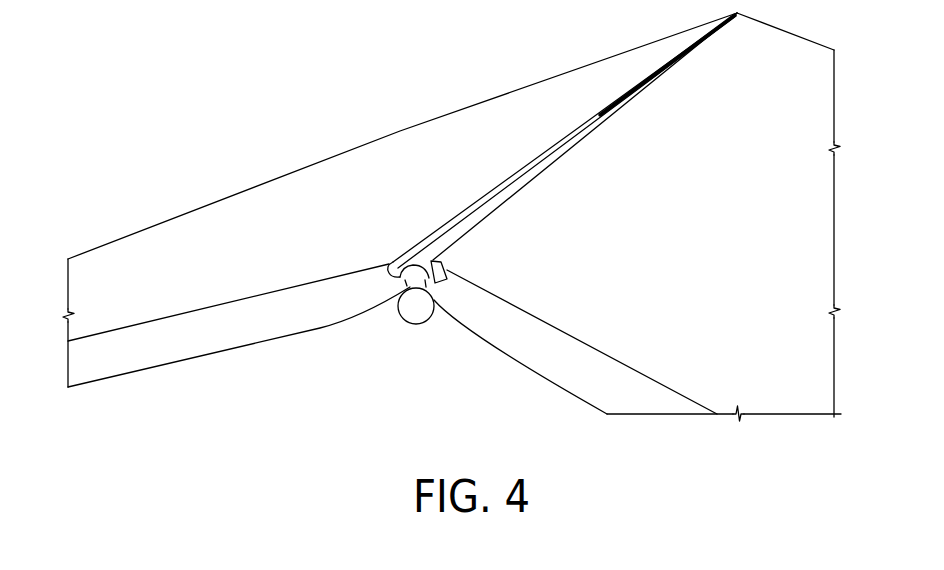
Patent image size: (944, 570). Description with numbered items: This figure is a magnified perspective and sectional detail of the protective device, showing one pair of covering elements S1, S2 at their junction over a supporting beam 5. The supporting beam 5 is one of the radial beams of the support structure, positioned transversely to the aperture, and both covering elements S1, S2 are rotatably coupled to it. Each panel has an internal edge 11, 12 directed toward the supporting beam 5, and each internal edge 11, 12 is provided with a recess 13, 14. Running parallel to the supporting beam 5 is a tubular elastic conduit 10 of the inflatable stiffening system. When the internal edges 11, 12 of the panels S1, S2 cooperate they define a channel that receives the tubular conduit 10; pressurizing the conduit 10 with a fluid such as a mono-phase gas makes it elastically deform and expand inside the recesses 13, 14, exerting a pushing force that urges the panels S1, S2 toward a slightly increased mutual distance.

The covering element S1 is at (215, 250).
The covering element S2 is at (783, 303).
The tubular elastic conduit 10 is at (463, 222).
The edge 11 is at (523, 168).
The edge 12 is at (587, 132).
The recess 13 is at (388, 263).
The recess 14 is at (445, 278).
The supporting beam 5 is at (413, 312).